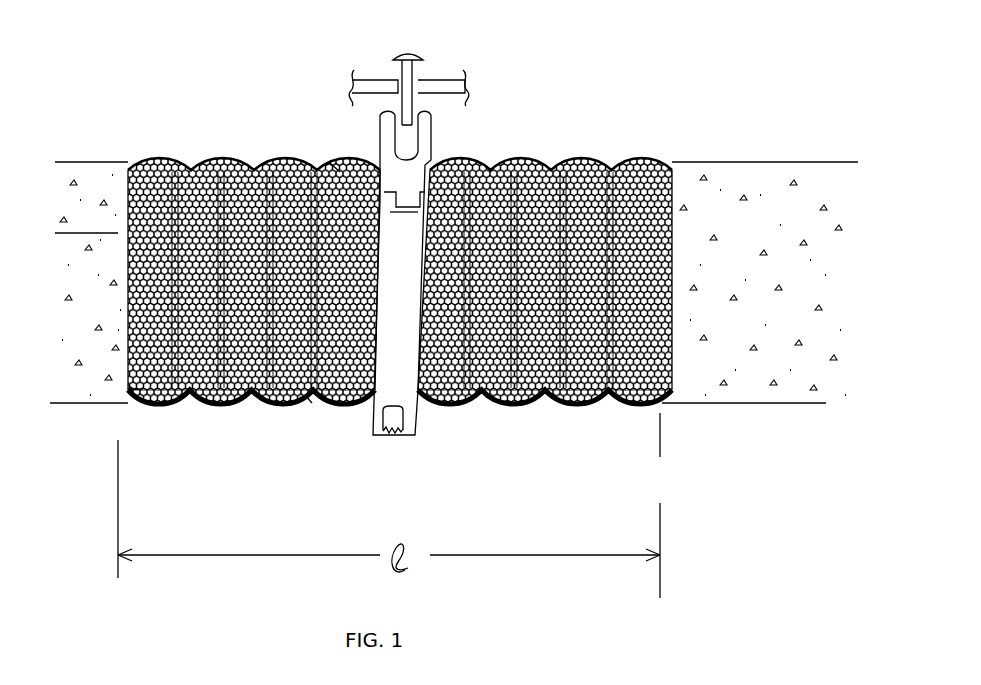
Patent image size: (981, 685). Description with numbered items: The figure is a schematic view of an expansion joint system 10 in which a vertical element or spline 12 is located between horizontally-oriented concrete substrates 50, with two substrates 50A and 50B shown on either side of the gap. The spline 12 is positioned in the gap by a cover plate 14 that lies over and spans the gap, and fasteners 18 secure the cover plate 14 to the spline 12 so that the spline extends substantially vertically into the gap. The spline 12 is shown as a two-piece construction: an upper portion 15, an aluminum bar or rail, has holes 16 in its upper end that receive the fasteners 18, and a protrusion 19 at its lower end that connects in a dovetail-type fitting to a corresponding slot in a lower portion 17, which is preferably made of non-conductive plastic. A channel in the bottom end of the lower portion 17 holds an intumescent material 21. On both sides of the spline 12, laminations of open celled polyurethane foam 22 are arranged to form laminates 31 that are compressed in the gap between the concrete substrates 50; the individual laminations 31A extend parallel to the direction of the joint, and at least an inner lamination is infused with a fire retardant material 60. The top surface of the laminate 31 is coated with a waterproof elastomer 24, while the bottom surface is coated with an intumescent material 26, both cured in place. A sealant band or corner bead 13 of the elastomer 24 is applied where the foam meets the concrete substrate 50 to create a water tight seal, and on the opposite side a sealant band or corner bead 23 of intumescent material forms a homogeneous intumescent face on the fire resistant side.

The expansion joint system 10 is at (290, 48).
The spline 12 is at (370, 444).
The sealant band or corner bead 13 is at (145, 160).
The cover plate 14 is at (372, 80).
The upper portion 15 is at (376, 128).
The holes 16 is at (407, 142).
The lower portion 17 is at (368, 430).
The fasteners 18 is at (418, 54).
The protrusion 19 is at (405, 190).
The intumescent material 21 is at (393, 440).
The open celled polyurethane foam 22 is at (183, 163).
The sealant band or corner bead 23 is at (128, 408).
The waterproof elastomer 24 is at (219, 158).
The intumescent material 26 is at (200, 404).
The laminates 31 is at (282, 232).
The individual laminations 31A is at (333, 164).
The concrete substrates 50 is at (842, 150).
The concrete substrate 50A is at (96, 162).
The concrete substrate 50B is at (772, 162).
The fire retardant material 60 is at (143, 382).